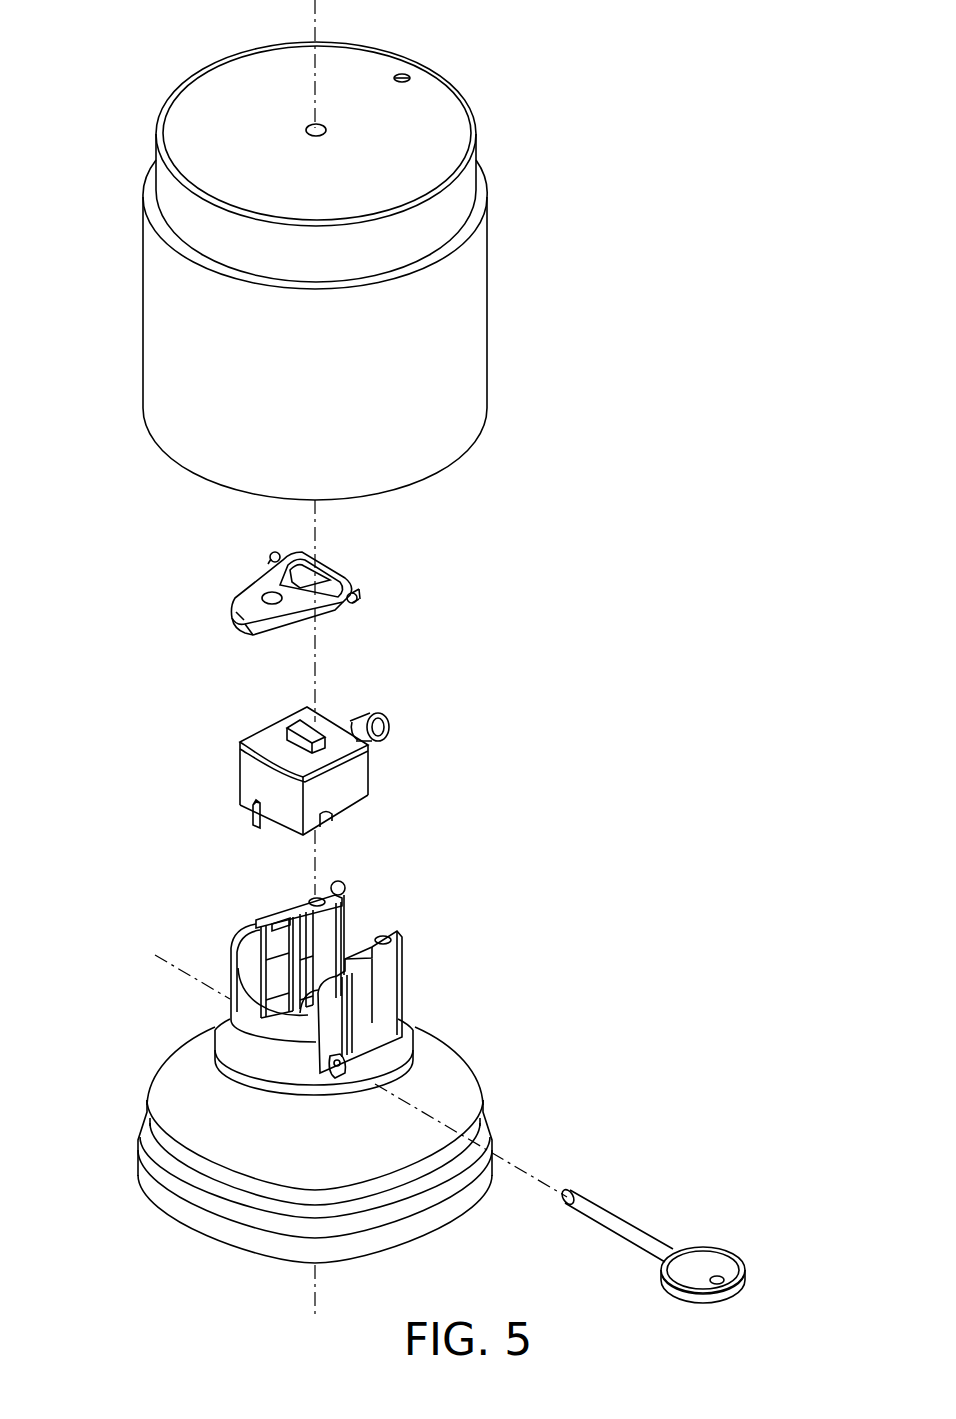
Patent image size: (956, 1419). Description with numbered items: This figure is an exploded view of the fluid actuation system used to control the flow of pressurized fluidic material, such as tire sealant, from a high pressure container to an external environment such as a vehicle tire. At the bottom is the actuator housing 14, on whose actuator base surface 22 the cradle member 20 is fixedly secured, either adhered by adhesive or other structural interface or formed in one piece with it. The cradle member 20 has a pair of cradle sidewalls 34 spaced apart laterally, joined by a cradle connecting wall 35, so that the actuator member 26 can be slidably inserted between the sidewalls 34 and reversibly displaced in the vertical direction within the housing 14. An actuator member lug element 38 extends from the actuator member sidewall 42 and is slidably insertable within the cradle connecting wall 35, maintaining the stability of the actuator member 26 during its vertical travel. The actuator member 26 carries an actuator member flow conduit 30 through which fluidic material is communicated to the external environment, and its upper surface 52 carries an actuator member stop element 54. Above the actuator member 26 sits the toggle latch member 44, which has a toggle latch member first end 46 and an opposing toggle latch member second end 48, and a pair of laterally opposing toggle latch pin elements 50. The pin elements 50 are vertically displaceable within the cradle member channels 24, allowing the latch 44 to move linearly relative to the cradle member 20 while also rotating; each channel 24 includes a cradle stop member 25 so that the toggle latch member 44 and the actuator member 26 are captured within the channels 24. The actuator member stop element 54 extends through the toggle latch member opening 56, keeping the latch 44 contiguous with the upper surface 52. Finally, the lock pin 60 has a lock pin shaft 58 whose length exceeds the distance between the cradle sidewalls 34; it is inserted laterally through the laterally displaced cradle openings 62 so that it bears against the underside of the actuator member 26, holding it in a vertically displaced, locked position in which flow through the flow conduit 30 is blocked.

The actuator housing 14 is at (341, 1053).
The cradle member 20 is at (347, 1009).
The actuator base surface 22 is at (443, 1050).
The cradle member channels 24 is at (285, 957).
The cradle stop member 25 is at (283, 918).
The actuator member 26 is at (375, 770).
The actuator member flow conduit 30 is at (373, 718).
The cradle sidewalls 34 is at (402, 987).
The cradle connecting wall 35 is at (238, 1030).
The actuator member lug element 38 is at (253, 812).
The actuator member sidewall 42 is at (298, 733).
The toggle latch member 44 is at (284, 566).
The toggle latch member first end 46 is at (228, 626).
The toggle latch member second end 48 is at (355, 568).
The toggle latch pin elements 50 is at (275, 556).
The upper surface 52 is at (270, 740).
The actuator member stop element 54 is at (307, 730).
The toggle latch member opening 56 is at (323, 580).
The lock pin shaft 58 is at (612, 1208).
The lock pin 60 is at (740, 1255).
The cradle openings 62 is at (328, 1067).